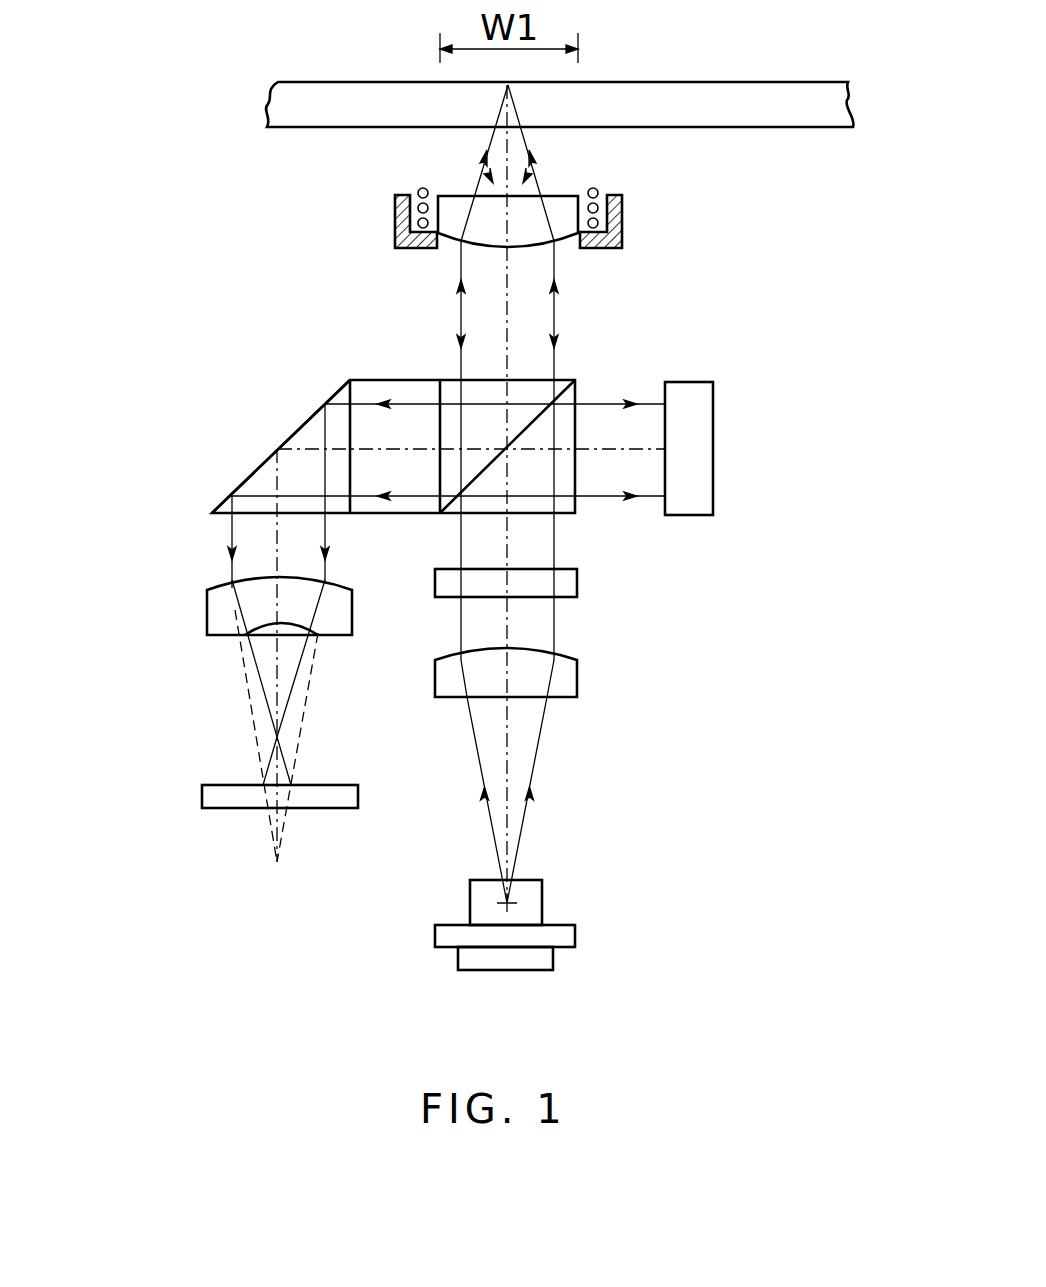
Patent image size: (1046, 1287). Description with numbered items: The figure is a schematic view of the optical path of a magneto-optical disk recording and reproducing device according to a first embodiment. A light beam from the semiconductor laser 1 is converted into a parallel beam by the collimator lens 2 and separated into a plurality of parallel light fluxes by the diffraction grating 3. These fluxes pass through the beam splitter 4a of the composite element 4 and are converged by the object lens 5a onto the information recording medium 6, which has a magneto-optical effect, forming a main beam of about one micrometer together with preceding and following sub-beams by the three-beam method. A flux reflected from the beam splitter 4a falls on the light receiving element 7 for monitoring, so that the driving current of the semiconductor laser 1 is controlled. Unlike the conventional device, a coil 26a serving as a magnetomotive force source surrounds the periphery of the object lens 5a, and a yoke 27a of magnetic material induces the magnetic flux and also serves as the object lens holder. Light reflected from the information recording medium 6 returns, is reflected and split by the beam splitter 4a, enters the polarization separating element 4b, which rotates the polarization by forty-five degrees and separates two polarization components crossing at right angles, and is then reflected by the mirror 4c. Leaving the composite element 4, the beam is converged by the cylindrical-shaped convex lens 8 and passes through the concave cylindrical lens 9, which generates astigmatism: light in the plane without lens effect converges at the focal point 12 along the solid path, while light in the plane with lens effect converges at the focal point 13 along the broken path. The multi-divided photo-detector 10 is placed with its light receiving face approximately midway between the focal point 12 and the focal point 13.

The semiconductor laser 1 is at (573, 945).
The collimator lens 2 is at (577, 698).
The diffraction grating 3 is at (577, 598).
The composite element 4 is at (402, 402).
The beam splitter 4a is at (563, 425).
The polarization separating element 4b is at (398, 379).
The mirror 4c is at (273, 477).
The object lens 5a is at (563, 203).
The information recording medium 6 is at (810, 107).
The light receiving element 7 is at (693, 395).
The cylindrical-shaped convex lens 8 is at (220, 583).
The concave cylindrical lens 9 is at (260, 632).
The multi-divided photo-detector 10 is at (200, 795).
The focal point 12 is at (275, 737).
The focal point 13 is at (275, 862).
The coil 26a is at (420, 188).
The yoke 27a is at (393, 238).